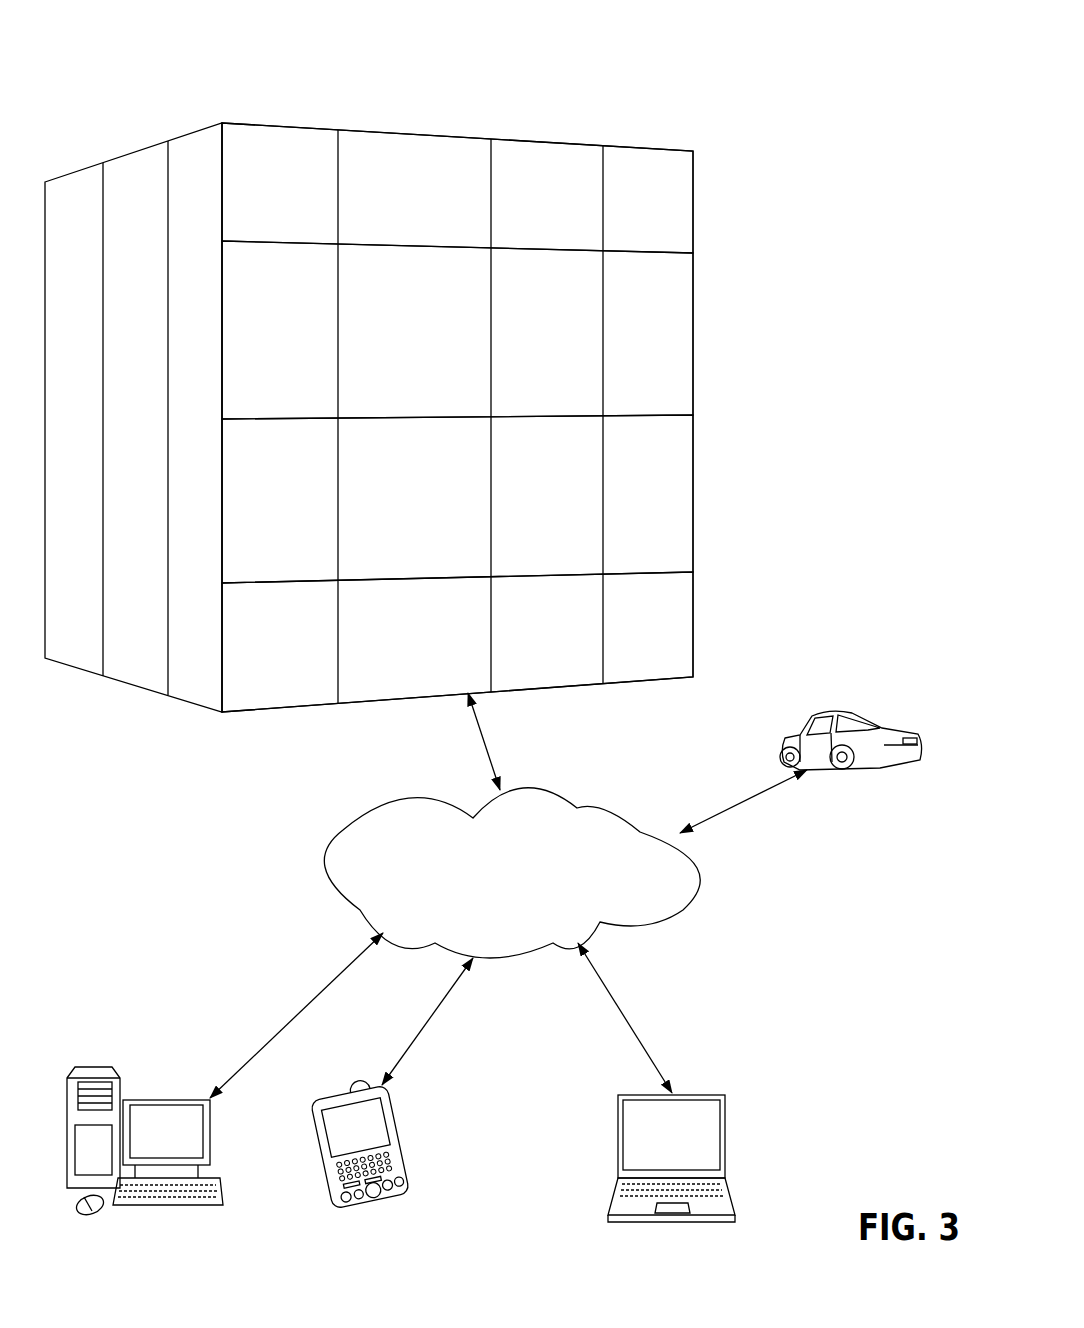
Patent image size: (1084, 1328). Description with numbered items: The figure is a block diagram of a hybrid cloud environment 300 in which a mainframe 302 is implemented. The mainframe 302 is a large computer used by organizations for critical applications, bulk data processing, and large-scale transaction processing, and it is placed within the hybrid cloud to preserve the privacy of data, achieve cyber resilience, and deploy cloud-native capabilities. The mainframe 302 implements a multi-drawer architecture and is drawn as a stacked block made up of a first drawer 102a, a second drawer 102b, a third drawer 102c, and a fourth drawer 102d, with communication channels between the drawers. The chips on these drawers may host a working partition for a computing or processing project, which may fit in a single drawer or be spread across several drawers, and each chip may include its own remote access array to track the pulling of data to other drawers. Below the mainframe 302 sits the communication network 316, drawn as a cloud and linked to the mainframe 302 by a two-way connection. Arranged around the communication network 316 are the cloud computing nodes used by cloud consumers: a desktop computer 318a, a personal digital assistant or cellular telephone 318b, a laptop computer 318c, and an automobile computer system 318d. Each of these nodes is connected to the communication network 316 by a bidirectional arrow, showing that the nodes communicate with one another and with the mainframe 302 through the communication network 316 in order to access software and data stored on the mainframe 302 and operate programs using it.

The hybrid cloud environment 300 is at (887, 95).
The mainframe 302 is at (635, 113).
The first drawer 102a is at (659, 182).
The second drawer 102b is at (659, 313).
The third drawer 102c is at (663, 458).
The fourth drawer 102d is at (657, 597).
The communication network 316 is at (512, 873).
The desktop computer 318a is at (165, 1097).
The personal digital assistant or cellular telephone 318b is at (403, 1141).
The laptop computer 318c is at (725, 1140).
The automobile computer system 318d is at (848, 712).